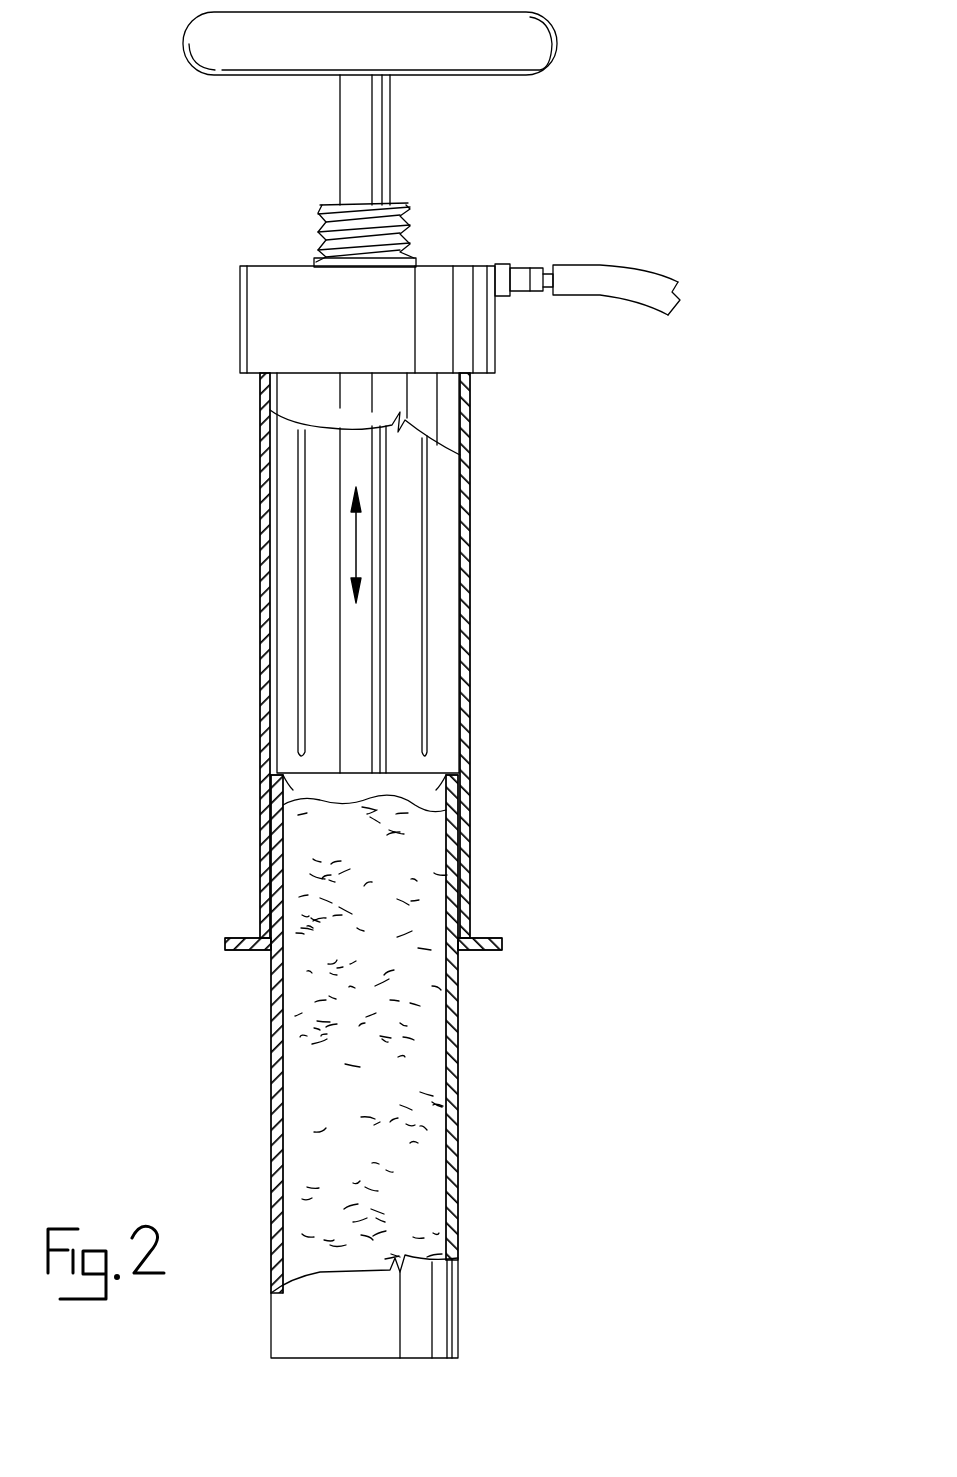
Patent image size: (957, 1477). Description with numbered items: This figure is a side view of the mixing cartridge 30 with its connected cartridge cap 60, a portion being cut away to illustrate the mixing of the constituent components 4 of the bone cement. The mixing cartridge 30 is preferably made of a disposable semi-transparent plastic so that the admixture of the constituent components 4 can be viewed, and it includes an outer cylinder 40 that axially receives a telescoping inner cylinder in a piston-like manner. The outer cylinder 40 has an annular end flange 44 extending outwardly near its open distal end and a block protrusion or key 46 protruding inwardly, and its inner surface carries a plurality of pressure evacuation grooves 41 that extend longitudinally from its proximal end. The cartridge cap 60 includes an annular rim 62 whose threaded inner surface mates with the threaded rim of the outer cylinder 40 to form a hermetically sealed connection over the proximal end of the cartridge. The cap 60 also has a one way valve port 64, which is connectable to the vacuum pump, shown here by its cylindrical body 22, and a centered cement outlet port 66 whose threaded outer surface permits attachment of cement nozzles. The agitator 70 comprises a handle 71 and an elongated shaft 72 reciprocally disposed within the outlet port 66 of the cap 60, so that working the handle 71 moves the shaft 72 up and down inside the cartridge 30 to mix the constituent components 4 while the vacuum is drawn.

The constituent components 4 is at (410, 1055).
The cylindrical body 22 is at (618, 272).
The mixing cartridge 30 is at (473, 611).
The outer cylinder 40 is at (471, 515).
The pressure evacuation grooves 41 is at (270, 600).
The annular end flange 44 is at (480, 938).
The key 46 is at (268, 950).
The cartridge cap 60 is at (357, 277).
The annular rim 62 is at (482, 335).
The one way valve port 64 is at (500, 265).
The cement outlet port 66 is at (333, 238).
The agitator 70 is at (367, 108).
The handle 71 is at (245, 48).
The elongated shaft 72 is at (348, 122).